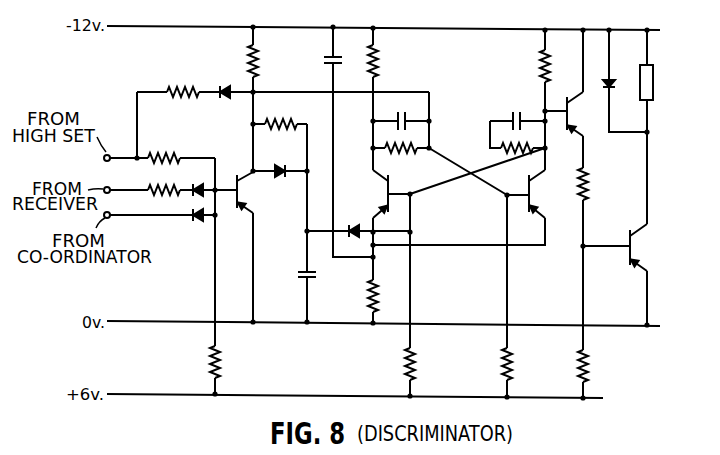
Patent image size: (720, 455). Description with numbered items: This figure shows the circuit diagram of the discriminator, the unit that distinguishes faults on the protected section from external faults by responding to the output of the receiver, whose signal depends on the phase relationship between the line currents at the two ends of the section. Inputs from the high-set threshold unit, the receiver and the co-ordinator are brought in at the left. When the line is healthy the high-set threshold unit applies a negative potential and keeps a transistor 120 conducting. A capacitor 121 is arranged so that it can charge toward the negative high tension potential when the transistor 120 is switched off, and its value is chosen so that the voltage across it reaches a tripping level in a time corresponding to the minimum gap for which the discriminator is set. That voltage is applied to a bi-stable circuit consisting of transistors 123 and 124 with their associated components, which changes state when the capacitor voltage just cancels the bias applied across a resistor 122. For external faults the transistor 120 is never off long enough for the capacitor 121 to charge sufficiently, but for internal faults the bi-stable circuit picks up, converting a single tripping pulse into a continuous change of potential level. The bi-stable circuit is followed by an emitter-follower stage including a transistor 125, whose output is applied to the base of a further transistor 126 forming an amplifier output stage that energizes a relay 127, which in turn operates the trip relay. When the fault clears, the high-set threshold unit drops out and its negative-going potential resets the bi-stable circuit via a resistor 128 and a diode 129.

The transistor 120 is at (268, 199).
The capacitor 121 is at (305, 271).
The resistor 122 is at (368, 294).
The transistor 123 is at (386, 202).
The transistor 124 is at (561, 204).
The transistor 125 is at (598, 120).
The transistor 126 is at (662, 258).
The relay 127 is at (644, 68).
The resistor 128 is at (177, 89).
The diode 129 is at (224, 89).